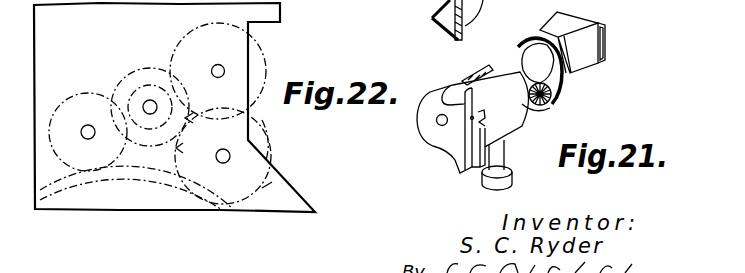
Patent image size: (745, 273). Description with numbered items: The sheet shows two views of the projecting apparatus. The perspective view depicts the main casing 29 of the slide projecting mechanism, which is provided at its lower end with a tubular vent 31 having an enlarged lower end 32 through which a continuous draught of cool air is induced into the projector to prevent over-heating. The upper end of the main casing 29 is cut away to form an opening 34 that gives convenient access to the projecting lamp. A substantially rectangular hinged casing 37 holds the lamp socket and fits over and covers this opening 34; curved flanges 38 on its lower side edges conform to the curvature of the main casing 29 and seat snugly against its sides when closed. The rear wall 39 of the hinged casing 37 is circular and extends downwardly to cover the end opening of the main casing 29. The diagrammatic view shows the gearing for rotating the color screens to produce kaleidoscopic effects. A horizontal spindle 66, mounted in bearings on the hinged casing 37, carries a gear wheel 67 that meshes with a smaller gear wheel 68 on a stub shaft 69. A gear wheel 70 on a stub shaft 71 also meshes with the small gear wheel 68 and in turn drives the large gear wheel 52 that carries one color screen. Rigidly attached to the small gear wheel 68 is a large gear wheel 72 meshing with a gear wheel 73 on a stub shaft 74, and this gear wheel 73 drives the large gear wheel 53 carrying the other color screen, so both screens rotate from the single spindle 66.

In FIG. 21, the main casing 29 is at (473, 122).
In FIG. 21, the tubular vent 31 is at (503, 157).
In FIG. 21, the enlarged lower end 32 is at (483, 186).
In FIG. 21, the opening 34 is at (468, 75).
In FIG. 21, the hinged casing 37 is at (572, 72).
In FIG. 21, the curved flanges 38 is at (570, 85).
In FIG. 21, the rear wall 39 is at (557, 105).
In FIG. 22, the large gear wheel 52 is at (65, 178).
In FIG. 22, the large gear wheel 53 is at (143, 182).
In FIG. 22, the horizontal spindle 66 is at (224, 67).
In FIG. 22, the gear wheel 67 is at (265, 60).
In FIG. 22, the small gear wheel 68 is at (164, 67).
In FIG. 22, the stub shaft 69 is at (150, 100).
In FIG. 22, the gear wheel 70 is at (85, 93).
In FIG. 22, the stub shaft 71 is at (87, 126).
In FIG. 22, the large gear wheel 72 is at (168, 147).
In FIG. 22, the gear wheel 73 is at (274, 153).
In FIG. 22, the stub shaft 74 is at (228, 161).